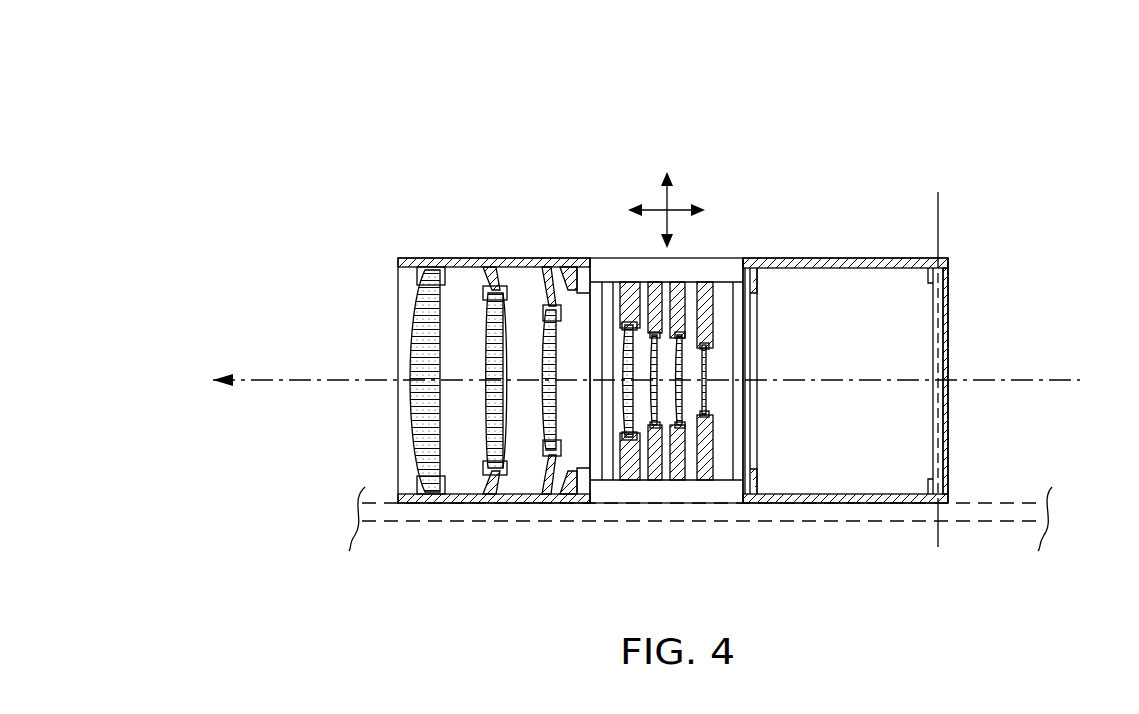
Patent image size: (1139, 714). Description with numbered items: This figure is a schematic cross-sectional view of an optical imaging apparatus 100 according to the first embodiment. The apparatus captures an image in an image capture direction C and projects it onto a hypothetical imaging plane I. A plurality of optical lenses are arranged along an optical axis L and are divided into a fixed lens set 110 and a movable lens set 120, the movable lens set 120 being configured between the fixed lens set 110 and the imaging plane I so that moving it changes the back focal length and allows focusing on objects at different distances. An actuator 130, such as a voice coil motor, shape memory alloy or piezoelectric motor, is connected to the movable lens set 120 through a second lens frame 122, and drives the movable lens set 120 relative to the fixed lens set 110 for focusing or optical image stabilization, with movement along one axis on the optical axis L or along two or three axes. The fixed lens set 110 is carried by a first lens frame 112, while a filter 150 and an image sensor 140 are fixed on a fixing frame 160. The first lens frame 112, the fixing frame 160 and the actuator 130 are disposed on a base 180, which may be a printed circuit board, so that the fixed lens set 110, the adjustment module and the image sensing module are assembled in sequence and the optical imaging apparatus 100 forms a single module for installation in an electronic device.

The optical imaging apparatus 100 is at (1030, 176).
The fixed lens set 110 is at (459, 288).
The first lens frame 112 is at (447, 497).
The movable lens set 120 is at (641, 335).
The second lens frame 122 is at (667, 470).
The actuator 130 is at (725, 460).
The image sensor 140 is at (948, 290).
The filter 150 is at (752, 347).
The fixing frame 160 is at (825, 500).
The base 180 is at (1020, 515).
The imaging plane I is at (938, 212).
The image capture direction C is at (265, 380).
The optical axis L is at (1052, 380).